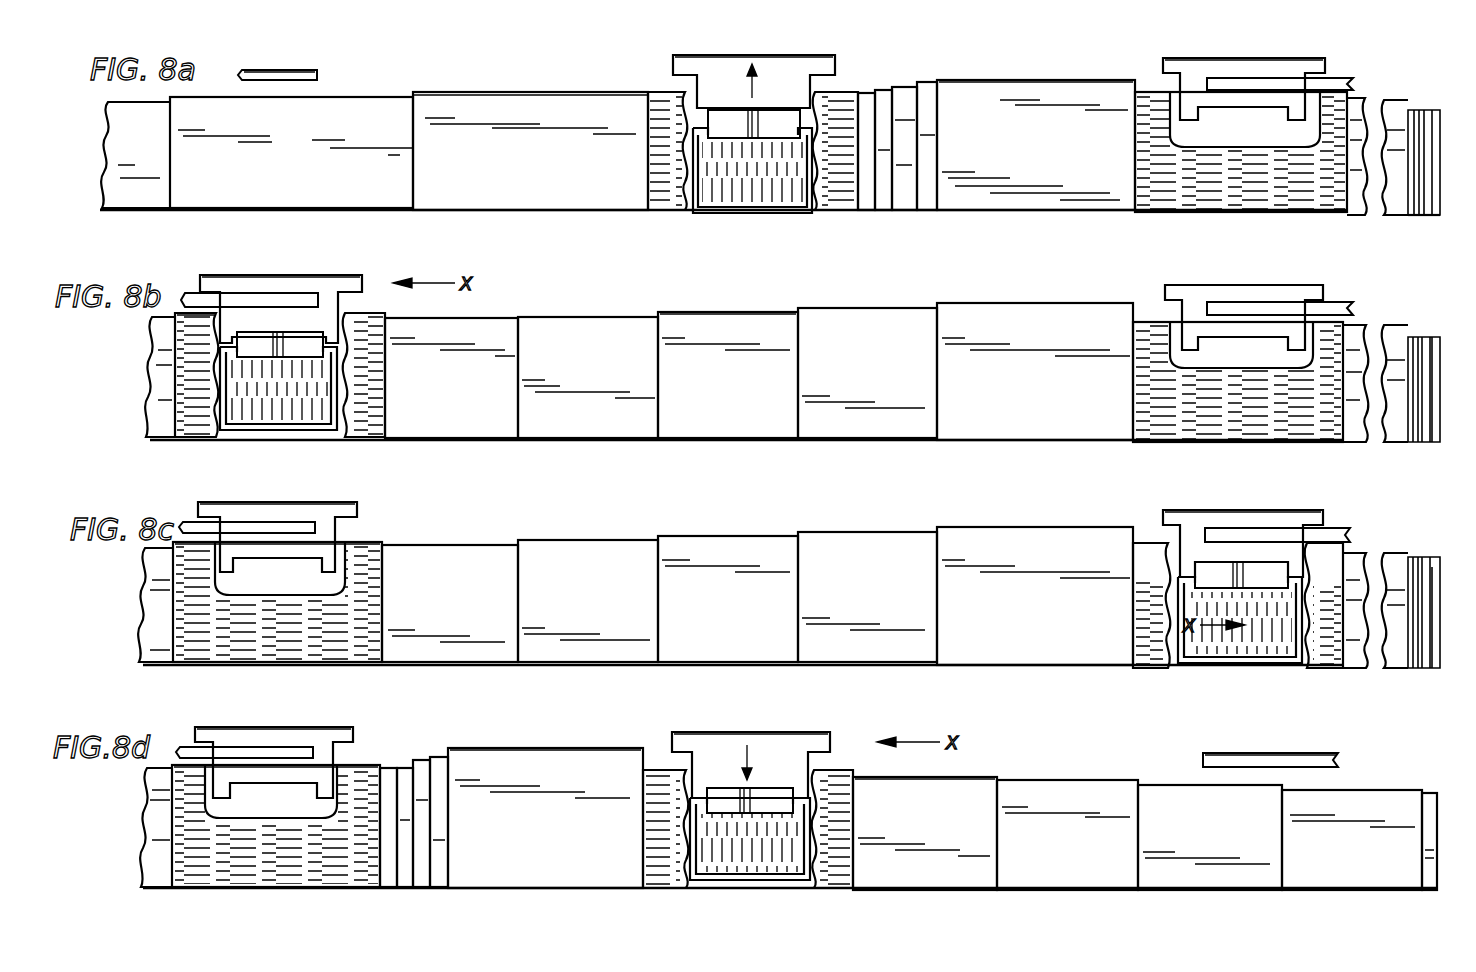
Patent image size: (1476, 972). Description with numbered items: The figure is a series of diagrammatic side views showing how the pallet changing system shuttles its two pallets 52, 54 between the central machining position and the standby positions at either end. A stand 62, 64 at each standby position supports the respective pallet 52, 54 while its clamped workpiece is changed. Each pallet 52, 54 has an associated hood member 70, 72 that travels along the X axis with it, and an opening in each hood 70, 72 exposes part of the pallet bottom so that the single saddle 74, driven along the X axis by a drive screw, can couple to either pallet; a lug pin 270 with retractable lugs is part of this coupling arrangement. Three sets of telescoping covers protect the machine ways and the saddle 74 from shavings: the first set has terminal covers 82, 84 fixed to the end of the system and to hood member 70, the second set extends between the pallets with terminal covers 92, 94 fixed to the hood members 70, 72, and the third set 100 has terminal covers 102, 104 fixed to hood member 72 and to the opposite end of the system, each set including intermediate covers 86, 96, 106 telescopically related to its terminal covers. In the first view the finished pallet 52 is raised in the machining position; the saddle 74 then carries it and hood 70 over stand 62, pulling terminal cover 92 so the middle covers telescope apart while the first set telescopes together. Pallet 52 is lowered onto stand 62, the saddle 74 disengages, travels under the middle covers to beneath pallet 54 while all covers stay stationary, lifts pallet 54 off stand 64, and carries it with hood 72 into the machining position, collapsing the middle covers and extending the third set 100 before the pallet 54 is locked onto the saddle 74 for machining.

In FIG. 8A, the pallet 52 is at (755, 57).
In FIG. 8B, the pallet 52 is at (283, 276).
In FIG. 8C, the pallet 52 is at (299, 548).
In FIG. 8D, the pallet 52 is at (261, 772).
In FIG. 8A, the pallet 54 is at (1192, 72).
In FIG. 8B, the pallet 54 is at (1244, 317).
In FIG. 8C, the pallet 54 is at (1232, 468).
In FIG. 8D, the pallet 54 is at (796, 769).
In FIG. 8A, the stand 62 is at (268, 72).
In FIG. 8B, the stand 62 is at (255, 300).
In FIG. 8C, the stand 62 is at (263, 520).
In FIG. 8D, the stand 62 is at (263, 750).
In FIG. 8A, the stand 64 is at (1240, 90).
In FIG. 8B, the stand 64 is at (1228, 302).
In FIG. 8C, the stand 64 is at (1234, 531).
In FIG. 8D, the stand 64 is at (1255, 762).
In FIG. 8A, the hood member 70 is at (683, 175).
In FIG. 8B, the hood member 70 is at (209, 368).
In FIG. 8C, the hood member 70 is at (281, 636).
In FIG. 8D, the hood member 70 is at (284, 865).
In FIG. 8A, the hood member 72 is at (1251, 183).
In FIG. 8B, the hood member 72 is at (1256, 416).
In FIG. 8C, the hood member 72 is at (1164, 581).
In FIG. 8D, the hood member 72 is at (681, 811).
In FIG. 8A, the saddle 74 is at (761, 178).
In FIG. 8B, the saddle 74 is at (276, 408).
In FIG. 8C, the saddle 74 is at (1281, 636).
In FIG. 8D, the saddle 74 is at (746, 866).
In FIG. 8A, the terminal cover 82 is at (156, 163).
In FIG. 8A, the terminal cover 84 is at (540, 163).
In FIG. 8B, the terminal cover 84 is at (160, 404).
In FIG. 8C, the terminal cover 84 is at (172, 636).
In FIG. 8D, the terminal cover 84 is at (206, 853).
In FIG. 8A, the intermediate covers 86 is at (306, 166).
In FIG. 8A, the terminal cover 92 is at (868, 92).
In FIG. 8B, the terminal cover 92 is at (466, 381).
In FIG. 8C, the terminal cover 92 is at (458, 606).
In FIG. 8D, the terminal cover 92 is at (388, 828).
In FIG. 8A, the terminal cover 94 is at (950, 58).
In FIG. 8B, the terminal cover 94 is at (1051, 383).
In FIG. 8C, the terminal cover 94 is at (1046, 611).
In FIG. 8D, the terminal cover 94 is at (554, 816).
In FIG. 8A, the intermediate covers 96 is at (930, 82).
In FIG. 8B, the intermediate covers 96 is at (596, 381).
In FIG. 8C, the intermediate covers 96 is at (598, 606).
In FIG. 8D, the intermediate covers 96 is at (437, 757).
In FIG. 8A, the third set of telescoping covers 100 is at (1396, 100).
In FIG. 8B, the third set of telescoping covers 100 is at (1380, 328).
In FIG. 8C, the third set of telescoping covers 100 is at (1382, 556).
In FIG. 8D, the third set of telescoping covers 100 is at (1098, 770).
In FIG. 8A, the terminal cover 102 is at (1383, 229).
In FIG. 8B, the terminal cover 102 is at (1398, 456).
In FIG. 8C, the terminal cover 102 is at (1396, 682).
In FIG. 8D, the terminal cover 102 is at (940, 831).
In FIG. 8A, the terminal cover 104 is at (1432, 115).
In FIG. 8B, the terminal cover 104 is at (1433, 442).
In FIG. 8C, the terminal cover 104 is at (1432, 668).
In FIG. 8D, the terminal cover 104 is at (1430, 795).
In FIG. 8A, the intermediate covers 106 is at (1418, 215).
In FIG. 8B, the intermediate covers 106 is at (1422, 337).
In FIG. 8C, the intermediate covers 106 is at (1422, 567).
In FIG. 8D, the intermediate covers 106 is at (1085, 836).
In FIG. 8A, the lug pin 270 is at (756, 126).
In FIG. 8B, the lug pin 270 is at (278, 357).
In FIG. 8C, the lug pin 270 is at (1235, 586).
In FIG. 8D, the lug pin 270 is at (754, 808).